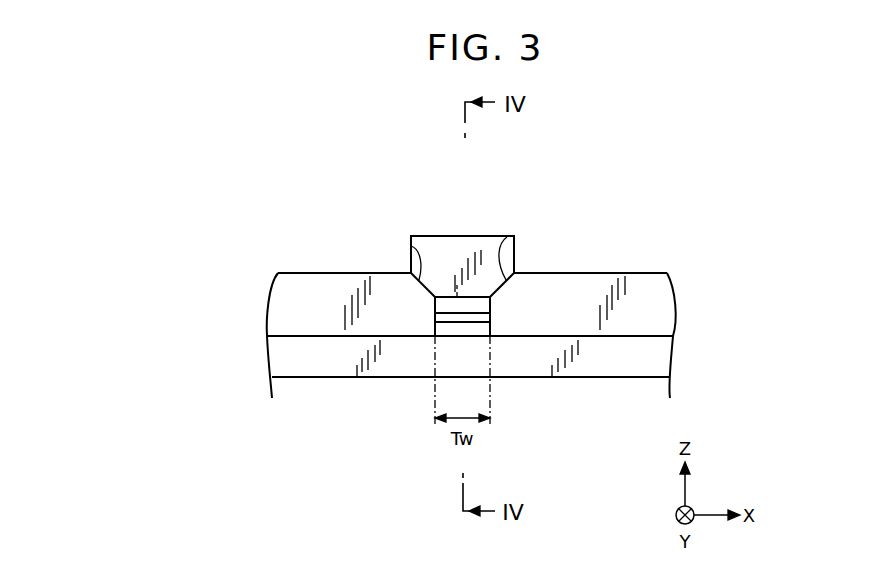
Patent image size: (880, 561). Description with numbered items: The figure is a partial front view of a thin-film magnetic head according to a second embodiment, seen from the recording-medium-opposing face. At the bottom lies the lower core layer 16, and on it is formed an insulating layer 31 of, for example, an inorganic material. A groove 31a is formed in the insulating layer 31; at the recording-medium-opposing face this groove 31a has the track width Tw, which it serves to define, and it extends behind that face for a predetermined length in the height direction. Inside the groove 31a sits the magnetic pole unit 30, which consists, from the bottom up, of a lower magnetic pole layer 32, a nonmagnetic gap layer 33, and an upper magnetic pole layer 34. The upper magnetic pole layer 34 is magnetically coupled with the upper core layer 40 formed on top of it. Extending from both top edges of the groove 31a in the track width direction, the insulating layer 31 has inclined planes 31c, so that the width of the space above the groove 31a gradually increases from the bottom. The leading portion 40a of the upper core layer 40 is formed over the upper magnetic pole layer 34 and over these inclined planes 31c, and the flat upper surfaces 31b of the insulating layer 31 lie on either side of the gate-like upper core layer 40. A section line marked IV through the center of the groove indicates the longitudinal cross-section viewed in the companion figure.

The lower core layer 16 is at (628, 356).
The insulating layer 31 is at (297, 310).
The groove 31a is at (457, 331).
The upper surface of buffer layer 31b is at (305, 272).
The inclined planes 31c is at (411, 246).
The upper core layer 40 is at (433, 237).
The leading portion 40a is at (460, 237).
The magnetic pole unit 30 is at (647, 212).
The lower magnetic pole layer 32 is at (490, 330).
The nonmagnetic gap layer 33 is at (490, 318).
The upper magnetic pole layer 34 is at (490, 306).